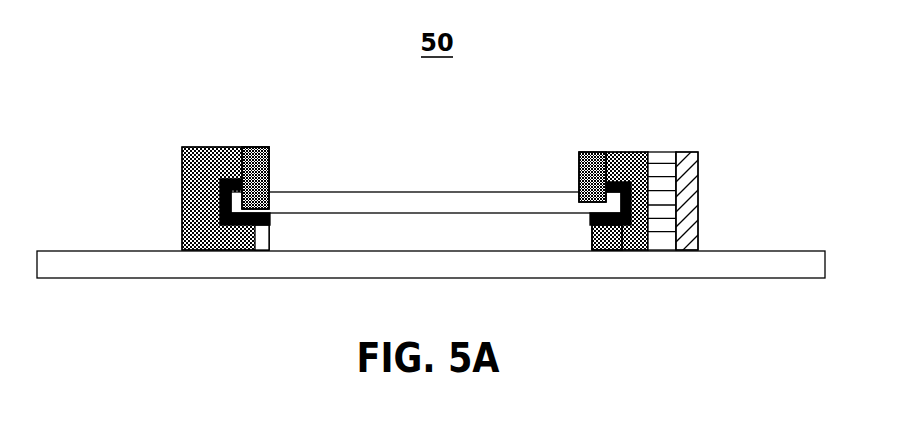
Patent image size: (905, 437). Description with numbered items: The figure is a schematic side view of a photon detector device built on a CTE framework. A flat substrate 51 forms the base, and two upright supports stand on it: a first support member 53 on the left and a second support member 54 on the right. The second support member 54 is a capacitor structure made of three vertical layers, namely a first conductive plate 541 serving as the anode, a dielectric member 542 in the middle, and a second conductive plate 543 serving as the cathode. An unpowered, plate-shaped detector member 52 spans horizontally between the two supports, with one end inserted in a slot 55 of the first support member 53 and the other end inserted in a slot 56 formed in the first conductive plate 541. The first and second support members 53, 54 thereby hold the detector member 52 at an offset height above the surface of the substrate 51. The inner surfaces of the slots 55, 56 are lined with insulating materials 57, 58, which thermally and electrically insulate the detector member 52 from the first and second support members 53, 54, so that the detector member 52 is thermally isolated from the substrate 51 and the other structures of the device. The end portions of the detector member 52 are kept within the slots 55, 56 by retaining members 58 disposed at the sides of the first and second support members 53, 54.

The substrate 51 is at (116, 278).
The unpowered detector member 52 is at (447, 192).
The first support member 53 is at (192, 147).
The second support member 54 is at (666, 144).
The first conductive plate 541 is at (627, 152).
The dielectric member 542 is at (658, 152).
The second conductive plate 543 is at (705, 173).
The slot 55 is at (262, 221).
The slot 56 is at (586, 219).
The insulating material 57 is at (243, 225).
The insulating material 58 is at (255, 147).